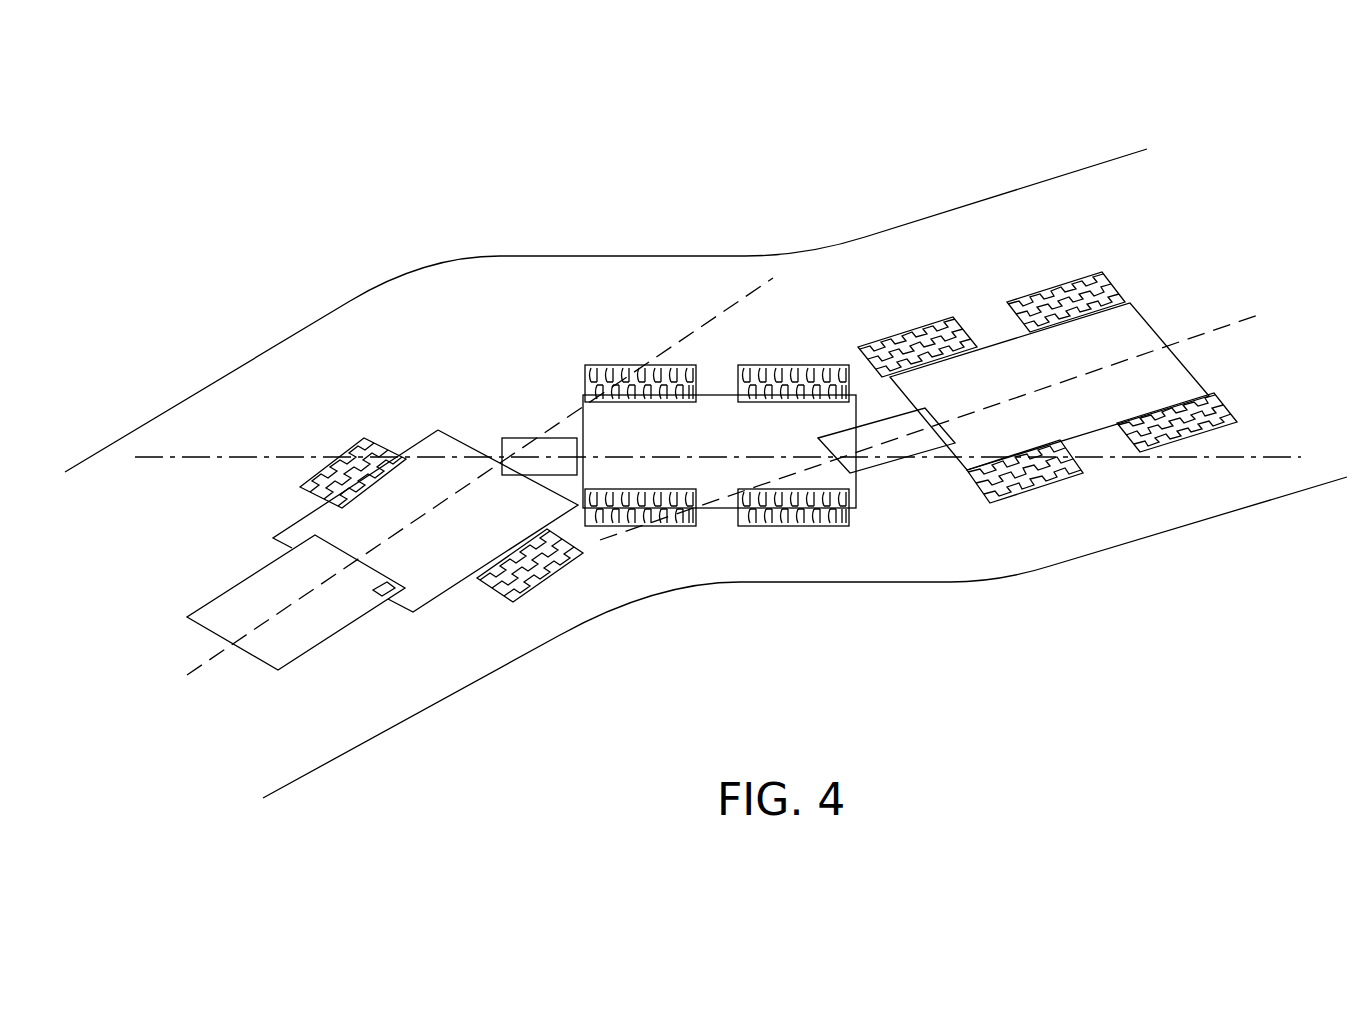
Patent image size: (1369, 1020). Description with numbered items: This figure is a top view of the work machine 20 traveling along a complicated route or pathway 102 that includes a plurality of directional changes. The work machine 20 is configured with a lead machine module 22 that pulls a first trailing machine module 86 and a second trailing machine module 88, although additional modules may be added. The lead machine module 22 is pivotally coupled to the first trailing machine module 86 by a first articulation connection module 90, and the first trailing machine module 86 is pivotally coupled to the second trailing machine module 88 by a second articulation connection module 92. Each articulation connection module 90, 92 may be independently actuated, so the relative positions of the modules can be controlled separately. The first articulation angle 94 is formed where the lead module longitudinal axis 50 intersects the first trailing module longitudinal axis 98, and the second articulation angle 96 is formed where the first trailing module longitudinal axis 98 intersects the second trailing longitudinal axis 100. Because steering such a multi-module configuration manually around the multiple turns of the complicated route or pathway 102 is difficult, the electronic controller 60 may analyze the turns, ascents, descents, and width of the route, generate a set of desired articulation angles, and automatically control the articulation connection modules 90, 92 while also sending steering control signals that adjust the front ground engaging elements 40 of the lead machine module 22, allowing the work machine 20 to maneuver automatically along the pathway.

The work machine 20 is at (466, 180).
The lead machine module 22 is at (232, 608).
The front ground engaging elements 40 is at (368, 438).
The lead module longitudinal axis 50 is at (203, 667).
The electronic controller 60 is at (392, 598).
The first trailing machine module 86 is at (720, 425).
The second trailing machine module 88 is at (1000, 358).
The first articulation connection module 90 is at (510, 448).
The second articulation connection module 92 is at (878, 432).
The first articulation angle 94 is at (547, 457).
The second articulation angle 96 is at (891, 448).
The first trailing module longitudinal axis 98 is at (268, 457).
The second trailing longitudinal axis 100 is at (1200, 332).
The complicated route or pathway 102 is at (1003, 552).